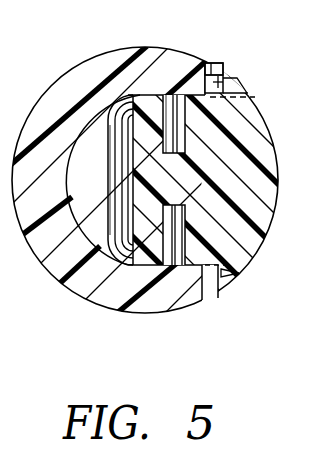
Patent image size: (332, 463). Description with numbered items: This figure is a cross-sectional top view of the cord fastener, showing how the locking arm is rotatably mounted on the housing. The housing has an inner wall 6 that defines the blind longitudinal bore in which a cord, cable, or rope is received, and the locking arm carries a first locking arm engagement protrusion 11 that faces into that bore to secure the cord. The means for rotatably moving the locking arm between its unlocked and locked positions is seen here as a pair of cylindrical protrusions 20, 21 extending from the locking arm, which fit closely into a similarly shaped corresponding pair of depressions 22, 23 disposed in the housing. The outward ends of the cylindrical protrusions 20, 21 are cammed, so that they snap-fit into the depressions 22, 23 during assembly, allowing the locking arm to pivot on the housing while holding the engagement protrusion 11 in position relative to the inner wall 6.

The inner wall 6 is at (66, 198).
The first locking arm engagement protrusion 11 is at (108, 177).
The cylindrical protrusion 20 is at (224, 80).
The cylindrical protrusion 21 is at (228, 272).
The depression 22 is at (210, 63).
The depression 23 is at (214, 280).